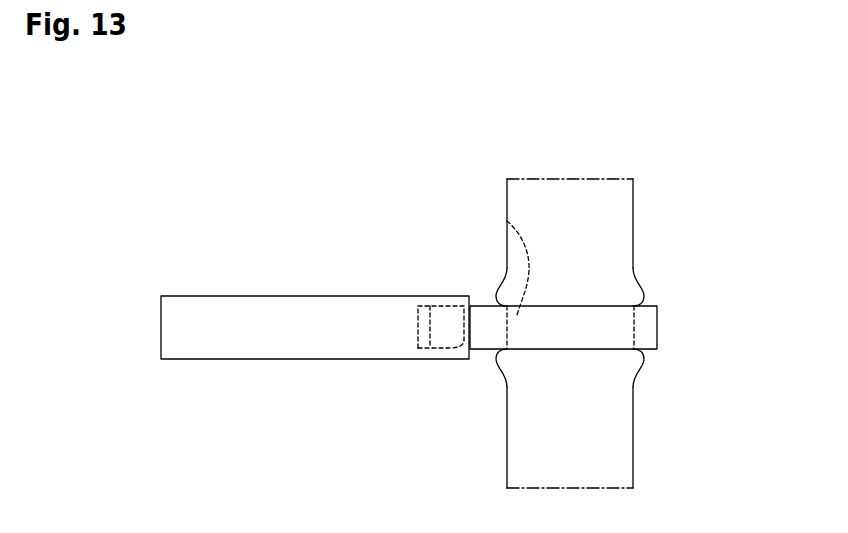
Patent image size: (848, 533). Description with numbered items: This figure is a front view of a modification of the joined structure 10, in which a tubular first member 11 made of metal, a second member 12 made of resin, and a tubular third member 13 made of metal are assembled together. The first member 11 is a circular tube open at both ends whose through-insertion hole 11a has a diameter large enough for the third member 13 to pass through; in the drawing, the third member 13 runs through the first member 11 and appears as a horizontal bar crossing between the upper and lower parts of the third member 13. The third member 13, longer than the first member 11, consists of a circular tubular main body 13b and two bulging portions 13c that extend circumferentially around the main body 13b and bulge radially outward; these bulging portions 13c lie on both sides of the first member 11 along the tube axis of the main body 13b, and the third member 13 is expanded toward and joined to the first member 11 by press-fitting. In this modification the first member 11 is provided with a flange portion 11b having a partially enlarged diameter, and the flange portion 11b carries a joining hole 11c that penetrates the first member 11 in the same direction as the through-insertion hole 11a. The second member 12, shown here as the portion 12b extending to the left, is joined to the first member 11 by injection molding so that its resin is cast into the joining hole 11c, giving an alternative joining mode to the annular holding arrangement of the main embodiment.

The structure 10 is at (669, 130).
The first member 11 is at (488, 305).
The through-insertion hole 11a is at (507, 221).
The flange portion 11b is at (418, 306).
The joining hole 11c is at (448, 349).
The second member 12 is at (315, 315).
The core wire of wiring member 12b is at (260, 296).
The third member 13 is at (591, 179).
The main body 13b is at (633, 185).
The bulging portions 13c is at (644, 297).